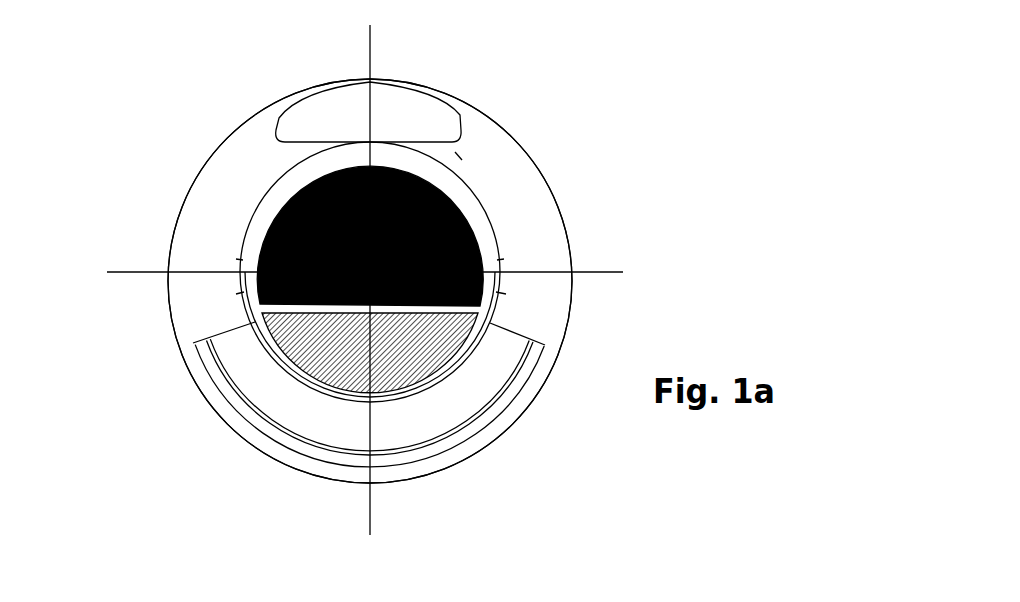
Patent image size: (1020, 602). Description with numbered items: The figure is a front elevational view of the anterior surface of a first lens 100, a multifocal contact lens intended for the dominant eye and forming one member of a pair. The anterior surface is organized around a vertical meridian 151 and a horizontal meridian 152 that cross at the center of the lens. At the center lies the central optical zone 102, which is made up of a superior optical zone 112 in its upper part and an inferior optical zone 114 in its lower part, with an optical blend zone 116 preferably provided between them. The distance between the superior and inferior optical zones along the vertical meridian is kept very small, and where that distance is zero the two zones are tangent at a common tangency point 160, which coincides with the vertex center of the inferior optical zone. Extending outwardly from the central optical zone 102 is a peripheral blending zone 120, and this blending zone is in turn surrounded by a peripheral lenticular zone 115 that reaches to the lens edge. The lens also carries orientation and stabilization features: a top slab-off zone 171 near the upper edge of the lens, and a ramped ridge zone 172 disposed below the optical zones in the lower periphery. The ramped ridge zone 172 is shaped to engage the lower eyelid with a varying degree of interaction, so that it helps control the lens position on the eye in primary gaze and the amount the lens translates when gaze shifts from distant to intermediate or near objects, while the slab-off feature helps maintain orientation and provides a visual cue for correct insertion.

The first lens 100 is at (727, 97).
The central optical zone 102 is at (265, 325).
The superior optical zone 112 is at (307, 183).
The inferior optical zone 114 is at (260, 220).
The peripheral zone 115 is at (550, 237).
The optical blend zone 116 is at (278, 310).
The peripheral blending zone 120 is at (470, 200).
The vertical meridian 151 is at (372, 517).
The horizontal meridian 152 is at (600, 273).
The common tangency point 160 is at (430, 183).
The top slab-off zone 171 is at (333, 103).
The ramped ridge zone 172 is at (317, 412).